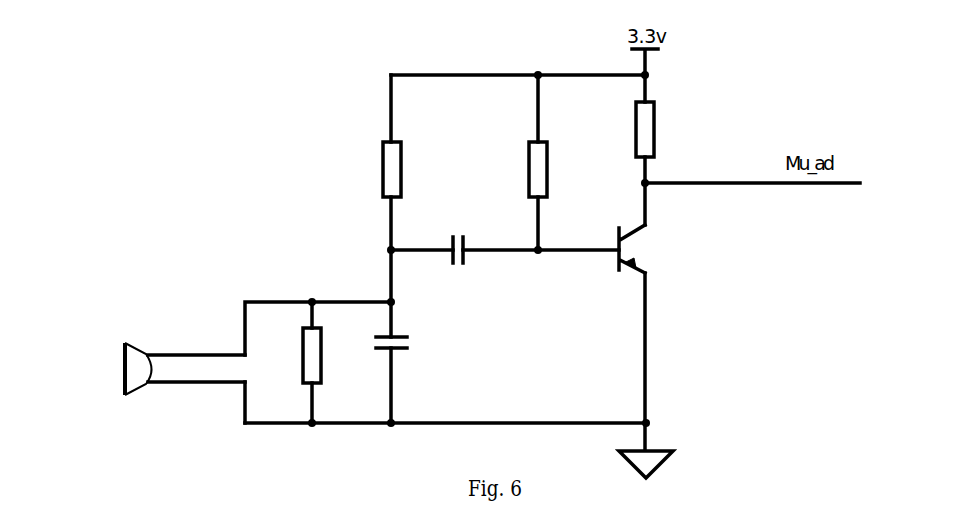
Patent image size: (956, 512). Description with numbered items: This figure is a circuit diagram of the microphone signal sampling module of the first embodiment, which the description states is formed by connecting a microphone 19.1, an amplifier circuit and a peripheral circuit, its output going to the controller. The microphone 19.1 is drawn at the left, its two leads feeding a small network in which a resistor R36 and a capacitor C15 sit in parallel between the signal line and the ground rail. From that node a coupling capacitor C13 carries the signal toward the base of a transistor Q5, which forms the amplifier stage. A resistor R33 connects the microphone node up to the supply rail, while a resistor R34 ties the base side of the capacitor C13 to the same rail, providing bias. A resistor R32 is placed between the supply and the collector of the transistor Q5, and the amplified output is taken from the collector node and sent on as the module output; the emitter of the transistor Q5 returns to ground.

The microphone 19.1 is at (123, 370).
The resistor R33 is at (410, 169).
The resistor R34 is at (557, 169).
The resistor R32 is at (665, 129).
The resistor R36 is at (332, 355).
The capacitor C13 is at (456, 237).
The capacitor C15 is at (410, 341).
The transistor Q5 is at (648, 249).